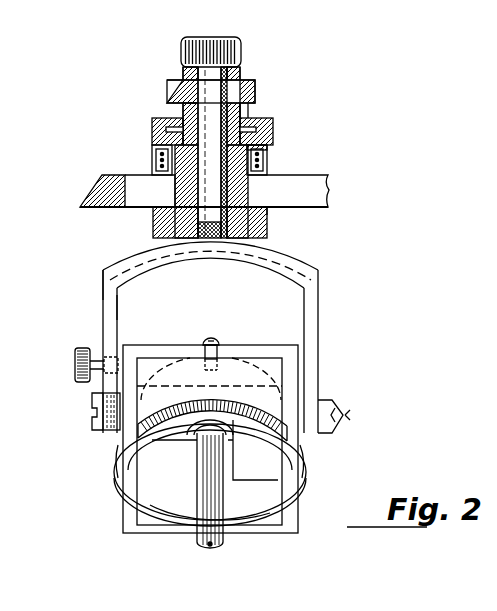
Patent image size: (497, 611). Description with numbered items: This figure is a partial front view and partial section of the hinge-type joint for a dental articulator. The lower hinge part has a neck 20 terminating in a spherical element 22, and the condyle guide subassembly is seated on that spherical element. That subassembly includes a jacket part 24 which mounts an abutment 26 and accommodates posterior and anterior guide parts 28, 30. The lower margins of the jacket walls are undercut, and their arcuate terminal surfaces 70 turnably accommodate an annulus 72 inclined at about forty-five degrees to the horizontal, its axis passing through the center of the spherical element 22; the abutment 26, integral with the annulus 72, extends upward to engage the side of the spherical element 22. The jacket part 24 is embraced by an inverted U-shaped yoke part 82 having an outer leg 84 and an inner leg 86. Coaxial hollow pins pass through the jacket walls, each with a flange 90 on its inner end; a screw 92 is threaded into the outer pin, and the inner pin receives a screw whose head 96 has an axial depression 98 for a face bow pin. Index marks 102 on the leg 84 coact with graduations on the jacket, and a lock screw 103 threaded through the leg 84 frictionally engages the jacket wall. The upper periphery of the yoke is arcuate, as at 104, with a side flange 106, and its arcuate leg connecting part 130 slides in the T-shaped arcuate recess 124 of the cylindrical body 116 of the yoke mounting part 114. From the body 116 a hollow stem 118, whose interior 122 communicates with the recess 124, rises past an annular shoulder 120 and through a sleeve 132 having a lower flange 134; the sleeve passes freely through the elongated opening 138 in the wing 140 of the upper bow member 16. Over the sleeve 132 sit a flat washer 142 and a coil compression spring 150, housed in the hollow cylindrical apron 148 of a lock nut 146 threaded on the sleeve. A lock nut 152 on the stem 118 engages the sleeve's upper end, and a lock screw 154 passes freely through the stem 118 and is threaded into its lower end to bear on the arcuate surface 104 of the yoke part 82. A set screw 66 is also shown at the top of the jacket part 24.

The lock screw 154 is at (181, 48).
The hollow stem 118 is at (232, 82).
The lock nut 152 is at (176, 86).
The lock nut 146 is at (258, 112).
The sleeve 132 is at (250, 186).
The yoke mounting part 114 is at (160, 135).
The hollow interior of the stem 122 is at (265, 130).
The flat washer 142 is at (155, 160).
The hollow cylindrical apron 148 is at (262, 165).
The coil compression spring 150 is at (258, 150).
The upper bow member 16 is at (100, 188).
The elongated opening 138 is at (142, 190).
The wing 140 is at (330, 177).
The cylindrical body 116 is at (160, 226).
The annular shoulder 120 is at (268, 226).
The flange 134 is at (270, 214).
The arcuate recess 124 is at (204, 240).
The arcuate upper periphery 104 is at (312, 258).
The side flange 106 is at (318, 275).
The leg connecting part 130 is at (255, 262).
The yoke leg 86 is at (318, 330).
The yoke part 82 is at (105, 284).
The yoke leg 84 is at (117, 306).
The jacket part 24 is at (300, 362).
The anterior guide part 30 is at (279, 332).
The set screw 66 is at (213, 340).
The flange 90 is at (144, 400).
The lock screw 103 is at (76, 352).
The screw 92 is at (92, 418).
The index marks 102 is at (108, 432).
The head 96 is at (334, 427).
The axial depression 98 is at (345, 415).
The abutment 26 is at (275, 462).
The posterior guide part 28 is at (178, 438).
The terminal surfaces 70 is at (142, 425).
The annulus 72 is at (268, 512).
The spherical element 22 is at (205, 440).
The neck 20 is at (198, 534).